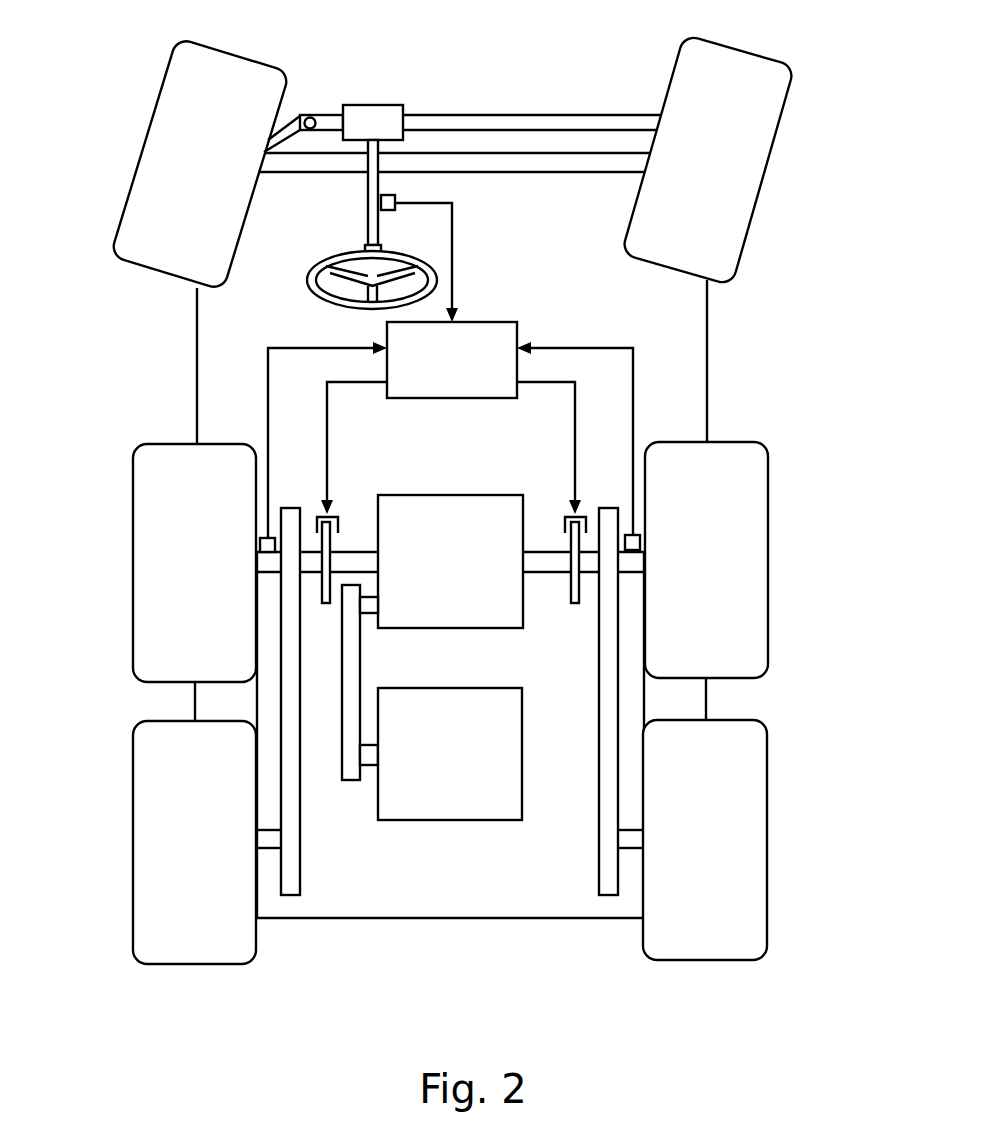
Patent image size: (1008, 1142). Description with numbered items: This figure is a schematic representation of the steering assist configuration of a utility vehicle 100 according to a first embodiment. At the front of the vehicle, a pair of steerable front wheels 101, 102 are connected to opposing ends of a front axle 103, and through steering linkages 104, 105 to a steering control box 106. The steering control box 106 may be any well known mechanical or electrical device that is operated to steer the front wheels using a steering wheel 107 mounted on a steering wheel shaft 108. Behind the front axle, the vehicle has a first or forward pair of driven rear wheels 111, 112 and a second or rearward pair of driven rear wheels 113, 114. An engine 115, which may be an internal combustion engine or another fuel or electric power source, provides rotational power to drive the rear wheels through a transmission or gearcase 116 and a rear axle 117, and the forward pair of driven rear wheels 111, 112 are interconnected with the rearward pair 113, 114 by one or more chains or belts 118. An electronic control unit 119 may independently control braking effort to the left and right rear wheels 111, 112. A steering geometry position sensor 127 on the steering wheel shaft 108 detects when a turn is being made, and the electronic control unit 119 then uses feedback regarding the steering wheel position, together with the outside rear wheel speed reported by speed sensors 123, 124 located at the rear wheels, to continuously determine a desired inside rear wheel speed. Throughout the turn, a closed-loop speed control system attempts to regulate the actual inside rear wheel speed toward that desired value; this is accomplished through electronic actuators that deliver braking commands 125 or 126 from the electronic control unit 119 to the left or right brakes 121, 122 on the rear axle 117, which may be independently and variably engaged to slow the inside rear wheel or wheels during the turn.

The utility vehicle 100 is at (707, 368).
The steerable front wheel 101 is at (157, 78).
The steerable front wheel 102 is at (778, 127).
The front axle 103 is at (528, 152).
The steering linkage 104 is at (332, 115).
The steering linkage 105 is at (477, 113).
The steering control box 106 is at (387, 105).
The steering wheel 107 is at (307, 283).
The steering wheel shaft 108 is at (368, 188).
The driven rear wheel 111 is at (133, 604).
The driven rear wheel 112 is at (769, 520).
The driven rear wheel 113 is at (133, 824).
The driven rear wheel 114 is at (768, 788).
The engine 115 is at (460, 822).
The transmission or gearcase 116 is at (398, 630).
The rear axle 117 is at (543, 574).
The chain or belt 118 is at (598, 757).
The electronic control unit 119 is at (493, 322).
The left brake 121 is at (338, 545).
The right brake 122 is at (563, 545).
The speed sensor 123 is at (258, 549).
The speed sensor 124 is at (642, 543).
The braking command 125 is at (327, 412).
The braking command 126 is at (575, 428).
The steering geometry position sensor 127 is at (392, 194).